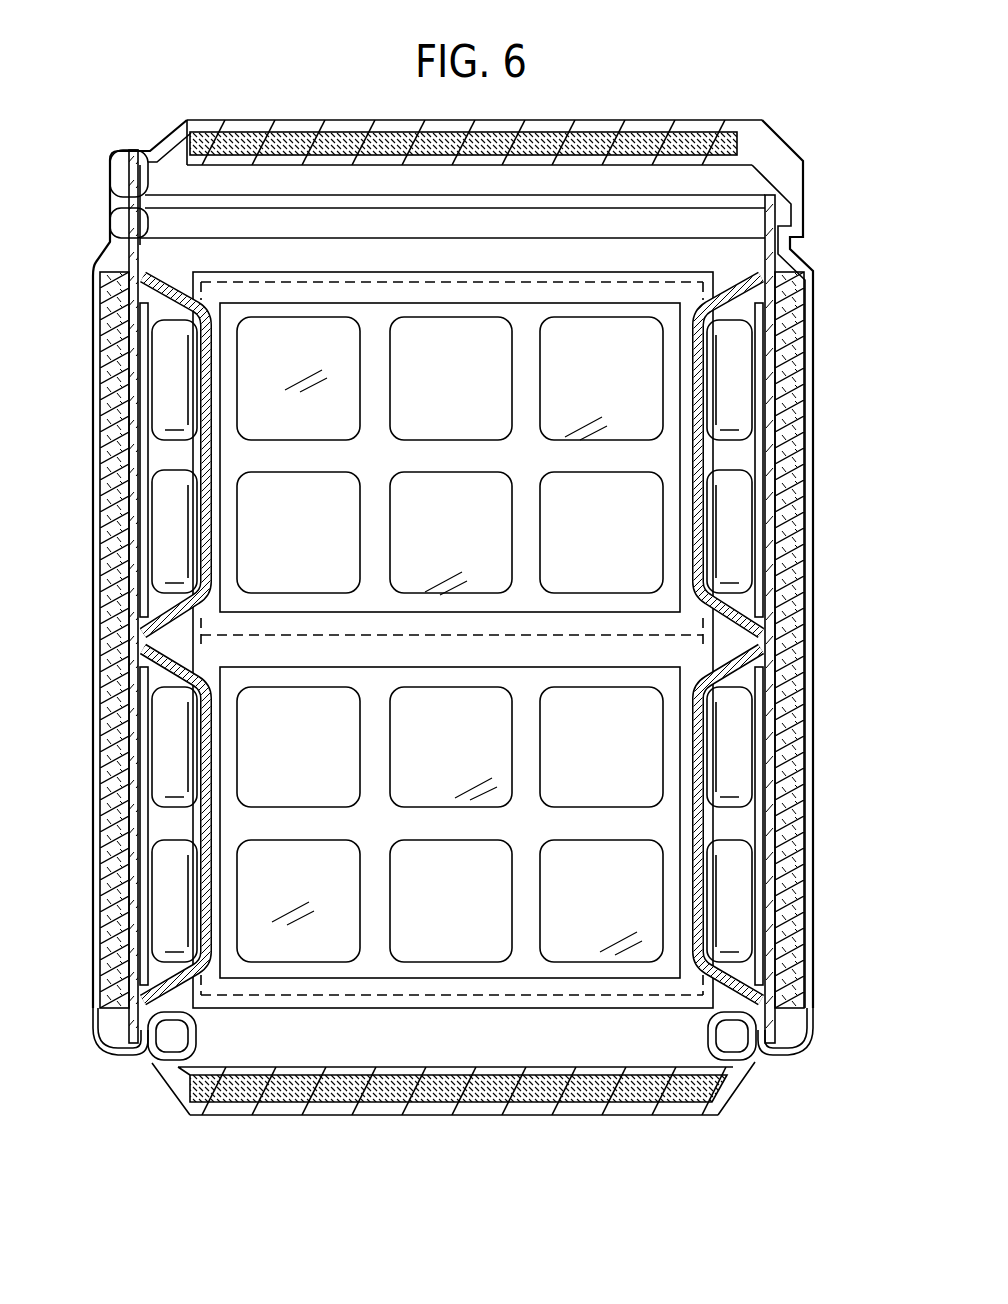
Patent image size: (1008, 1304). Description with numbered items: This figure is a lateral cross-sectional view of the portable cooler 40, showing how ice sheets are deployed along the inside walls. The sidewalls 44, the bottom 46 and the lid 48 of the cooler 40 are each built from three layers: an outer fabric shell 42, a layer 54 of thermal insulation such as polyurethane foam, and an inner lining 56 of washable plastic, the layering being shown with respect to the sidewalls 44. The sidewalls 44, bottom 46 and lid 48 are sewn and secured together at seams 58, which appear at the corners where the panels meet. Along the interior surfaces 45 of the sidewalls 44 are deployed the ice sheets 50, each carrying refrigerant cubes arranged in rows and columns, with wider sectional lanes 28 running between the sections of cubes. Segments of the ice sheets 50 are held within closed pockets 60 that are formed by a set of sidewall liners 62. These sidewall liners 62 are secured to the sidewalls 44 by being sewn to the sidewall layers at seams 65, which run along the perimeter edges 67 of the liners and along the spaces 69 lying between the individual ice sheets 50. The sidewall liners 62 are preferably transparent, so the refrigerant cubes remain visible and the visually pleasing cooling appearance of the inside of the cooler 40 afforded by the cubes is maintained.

The sectional lane 28 is at (577, 628).
The cooler 40 is at (120, 104).
The outer fabric shell 42 is at (102, 310).
The sidewalls 44 is at (93, 567).
The interior surfaces 45 is at (198, 260).
The bottom 46 is at (425, 1117).
The lid 48 is at (648, 118).
The ice sheets 50 is at (176, 352).
The layer of thermal insulation 54 is at (122, 378).
The inner lining 56 is at (136, 438).
The seams 58 is at (112, 193).
The closed pockets 60 is at (193, 448).
The sidewall liners 62 is at (207, 493).
The seams 65 is at (306, 281).
The perimeter edges 67 is at (462, 273).
The spaces 69 is at (567, 655).